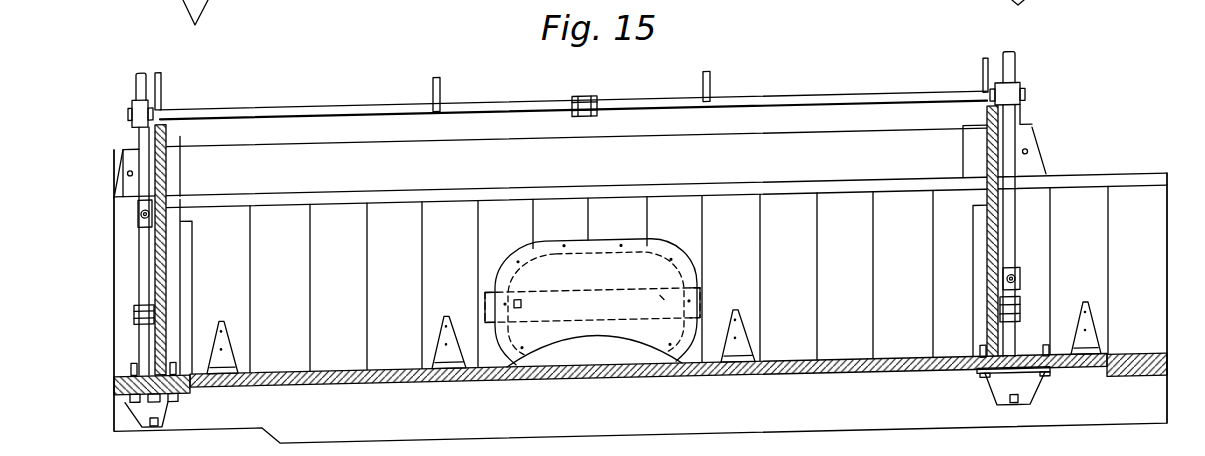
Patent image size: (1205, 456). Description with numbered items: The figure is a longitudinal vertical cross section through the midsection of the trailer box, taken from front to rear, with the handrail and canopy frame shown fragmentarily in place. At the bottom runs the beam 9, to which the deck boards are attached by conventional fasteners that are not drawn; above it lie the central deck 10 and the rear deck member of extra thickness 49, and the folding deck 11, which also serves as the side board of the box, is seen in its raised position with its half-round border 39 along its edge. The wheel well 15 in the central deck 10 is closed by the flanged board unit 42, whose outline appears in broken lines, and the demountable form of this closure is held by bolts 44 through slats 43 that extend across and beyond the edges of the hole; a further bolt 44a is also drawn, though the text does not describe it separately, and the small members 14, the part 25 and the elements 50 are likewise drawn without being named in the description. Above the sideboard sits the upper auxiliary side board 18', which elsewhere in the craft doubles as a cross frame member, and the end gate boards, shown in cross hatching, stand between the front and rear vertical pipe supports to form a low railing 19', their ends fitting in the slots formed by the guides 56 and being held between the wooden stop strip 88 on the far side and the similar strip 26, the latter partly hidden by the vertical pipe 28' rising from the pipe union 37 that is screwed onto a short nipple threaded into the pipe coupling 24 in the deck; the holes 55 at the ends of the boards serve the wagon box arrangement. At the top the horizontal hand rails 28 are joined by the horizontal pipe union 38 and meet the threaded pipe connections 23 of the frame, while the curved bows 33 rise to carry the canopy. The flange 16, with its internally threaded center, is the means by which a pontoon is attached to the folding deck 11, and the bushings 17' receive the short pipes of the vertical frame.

The beam 9 is at (670, 416).
The central deck 10 is at (792, 378).
The folding deck 11 is at (121, 262).
The gusset bracket 14 is at (654, 340).
The wheel well 15 is at (594, 350).
The flange 16 is at (195, 57).
The wall panel slat 17' is at (679, 279).
The upper auxiliary side board 18' is at (576, 158).
The low railing 19' is at (576, 240).
The pipe threaded connection 23 is at (1022, 296).
The pipe coupling 24 is at (166, 396).
The fastener 25 is at (160, 412).
The spacing strip 26 is at (145, 126).
The hand rail 28 is at (573, 97).
The threaded rod 28' is at (573, 214).
The bow 33 is at (182, 72).
The pipe union 37 is at (134, 316).
The horizontal pipe union 38 is at (599, 96).
The half-round border 39 is at (124, 199).
The flanged board unit 42 is at (596, 302).
The slat 43 is at (592, 305).
The bolt 44 is at (527, 305).
The bolt 44a is at (648, 303).
The rear deck member of extra thickness 49 is at (1173, 377).
The bolt 50 is at (134, 362).
The hole 55 is at (127, 163).
The guide 56 is at (982, 172).
The wooden stop strip 88 is at (180, 246).